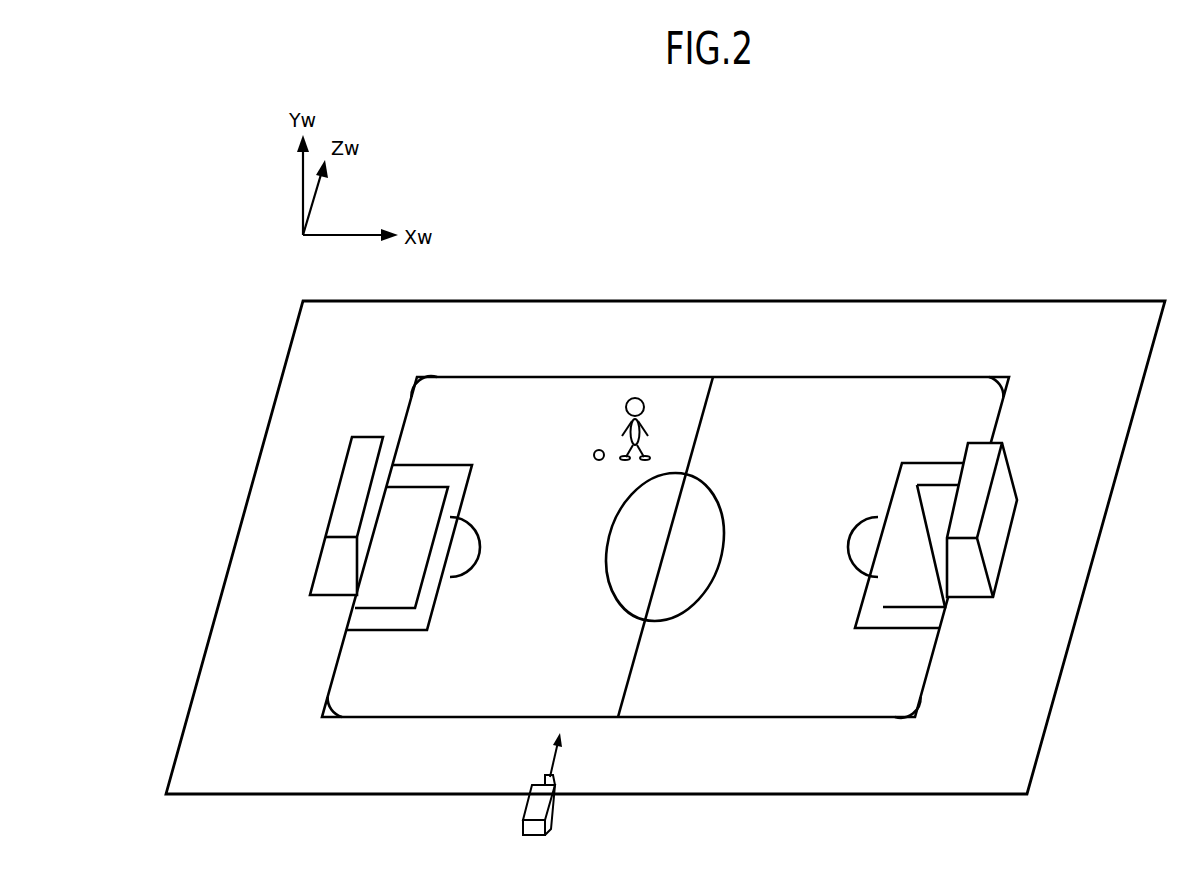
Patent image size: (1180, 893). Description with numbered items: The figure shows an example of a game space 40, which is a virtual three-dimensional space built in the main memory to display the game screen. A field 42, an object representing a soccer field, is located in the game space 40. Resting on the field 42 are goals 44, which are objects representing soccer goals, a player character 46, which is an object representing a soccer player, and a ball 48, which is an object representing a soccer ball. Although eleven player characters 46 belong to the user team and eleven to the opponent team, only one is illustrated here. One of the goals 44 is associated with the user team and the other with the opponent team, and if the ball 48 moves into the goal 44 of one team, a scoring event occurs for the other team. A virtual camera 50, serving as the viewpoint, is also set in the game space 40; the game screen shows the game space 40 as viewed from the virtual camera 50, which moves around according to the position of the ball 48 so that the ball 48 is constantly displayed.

The game space 40 is at (627, 192).
The field 42 is at (872, 313).
The goals 44 is at (317, 572).
The player character 46 is at (633, 397).
The ball 48 is at (593, 454).
The virtual camera 50 is at (557, 810).